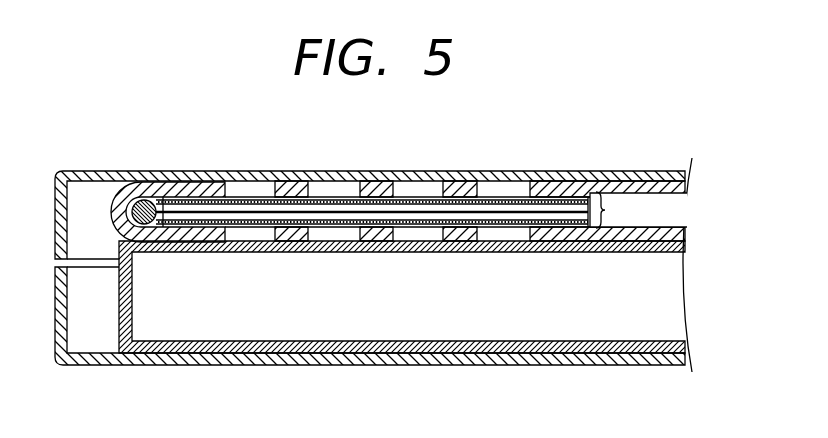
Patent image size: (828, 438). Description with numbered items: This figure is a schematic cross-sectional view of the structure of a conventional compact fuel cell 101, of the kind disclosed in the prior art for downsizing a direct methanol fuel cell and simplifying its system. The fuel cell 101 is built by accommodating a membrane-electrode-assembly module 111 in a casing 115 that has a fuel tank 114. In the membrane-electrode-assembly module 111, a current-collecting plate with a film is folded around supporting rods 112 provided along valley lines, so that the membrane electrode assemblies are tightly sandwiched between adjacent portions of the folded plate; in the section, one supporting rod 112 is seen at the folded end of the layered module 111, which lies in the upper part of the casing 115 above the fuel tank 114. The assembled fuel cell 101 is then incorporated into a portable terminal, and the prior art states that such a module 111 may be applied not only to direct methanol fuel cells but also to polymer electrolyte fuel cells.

The fuel cell 101 is at (596, 153).
The MEA module 111 is at (703, 189).
The supporting rods 112 is at (144, 200).
The fuel tank 114 is at (412, 367).
The casing 115 is at (172, 366).